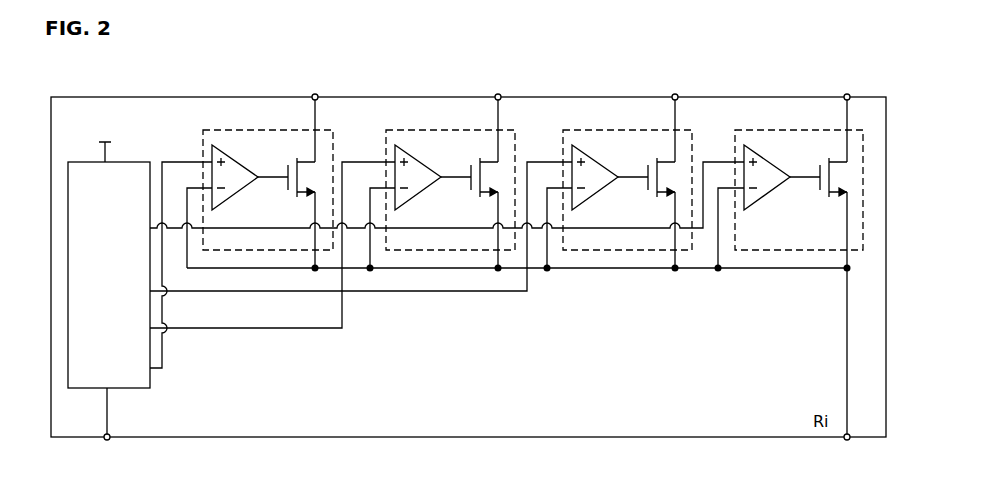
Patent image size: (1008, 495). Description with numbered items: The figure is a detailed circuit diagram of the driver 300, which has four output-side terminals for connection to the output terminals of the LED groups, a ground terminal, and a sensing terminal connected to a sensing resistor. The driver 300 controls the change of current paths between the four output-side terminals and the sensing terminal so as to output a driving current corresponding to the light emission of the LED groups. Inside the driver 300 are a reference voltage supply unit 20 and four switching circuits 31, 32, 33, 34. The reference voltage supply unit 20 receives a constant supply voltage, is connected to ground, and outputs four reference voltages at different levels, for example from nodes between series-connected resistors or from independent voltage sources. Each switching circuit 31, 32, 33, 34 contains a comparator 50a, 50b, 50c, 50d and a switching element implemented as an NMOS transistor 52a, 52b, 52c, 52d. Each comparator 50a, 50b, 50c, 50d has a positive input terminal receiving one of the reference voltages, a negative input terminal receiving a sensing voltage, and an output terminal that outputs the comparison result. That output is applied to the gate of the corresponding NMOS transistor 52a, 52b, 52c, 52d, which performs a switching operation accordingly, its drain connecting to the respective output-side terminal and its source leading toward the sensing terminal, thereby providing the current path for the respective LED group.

The reference voltage supply unit 20 is at (149, 162).
The first switching circuit 31 is at (273, 181).
The second switching circuit 32 is at (456, 181).
The third switching circuit 33 is at (633, 181).
The fourth switching circuit 34 is at (805, 181).
The comparator 50a is at (236, 193).
The comparator 50b is at (419, 193).
The comparator 50c is at (596, 193).
The comparator 50d is at (768, 193).
The NMOS transistor 52a is at (287, 195).
The NMOS transistor 52b is at (470, 195).
The NMOS transistor 52c is at (647, 195).
The NMOS transistor 52d is at (819, 195).
The driver 300 is at (203, 438).